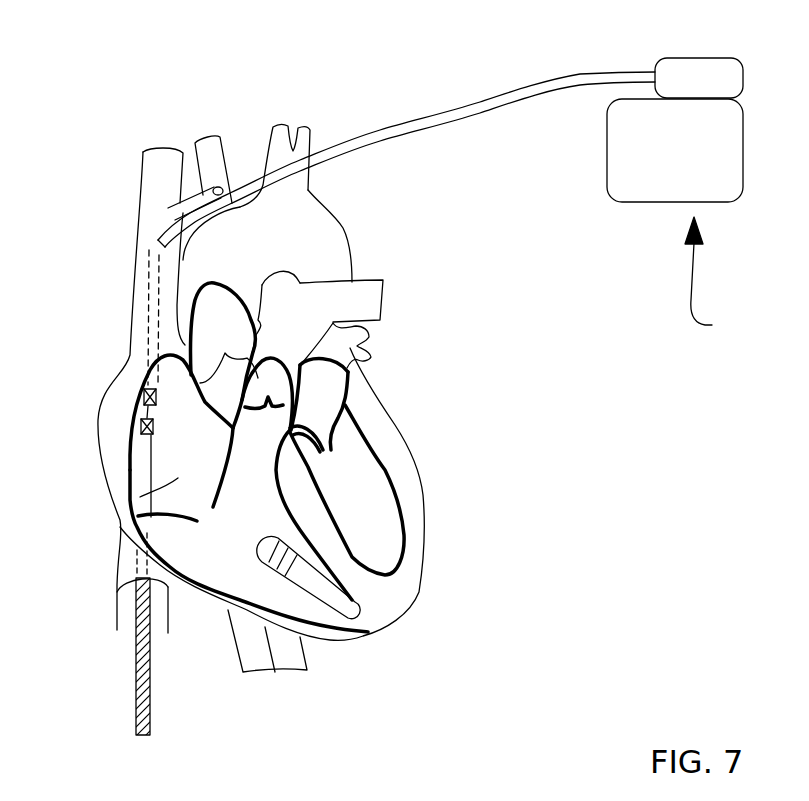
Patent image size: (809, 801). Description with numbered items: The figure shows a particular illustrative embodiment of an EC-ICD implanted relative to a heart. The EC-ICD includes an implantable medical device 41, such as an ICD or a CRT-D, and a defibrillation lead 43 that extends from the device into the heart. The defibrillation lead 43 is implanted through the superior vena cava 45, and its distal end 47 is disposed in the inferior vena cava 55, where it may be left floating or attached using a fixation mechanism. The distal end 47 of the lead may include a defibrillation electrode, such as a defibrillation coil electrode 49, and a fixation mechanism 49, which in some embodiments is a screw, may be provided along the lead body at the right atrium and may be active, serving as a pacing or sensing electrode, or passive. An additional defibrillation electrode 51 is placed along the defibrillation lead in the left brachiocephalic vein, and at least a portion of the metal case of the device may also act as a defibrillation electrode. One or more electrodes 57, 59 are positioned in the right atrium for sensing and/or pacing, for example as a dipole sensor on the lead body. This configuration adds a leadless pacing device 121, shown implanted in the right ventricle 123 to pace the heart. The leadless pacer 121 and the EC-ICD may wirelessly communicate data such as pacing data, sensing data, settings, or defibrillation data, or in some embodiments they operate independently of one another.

The implantable medical device 41 is at (712, 325).
The defibrillation lead 43 is at (592, 75).
The superior vena cava 45 is at (131, 232).
The distal end 47 is at (140, 733).
The defibrillation coil electrode 49 is at (138, 402).
The additional defibrillation electrode 51 is at (214, 187).
The inferior vena cava 55 is at (117, 591).
The electrode 57 is at (133, 380).
The electrode 59 is at (130, 448).
The leadless pacing device 121 is at (363, 627).
The right ventricle 123 is at (275, 672).